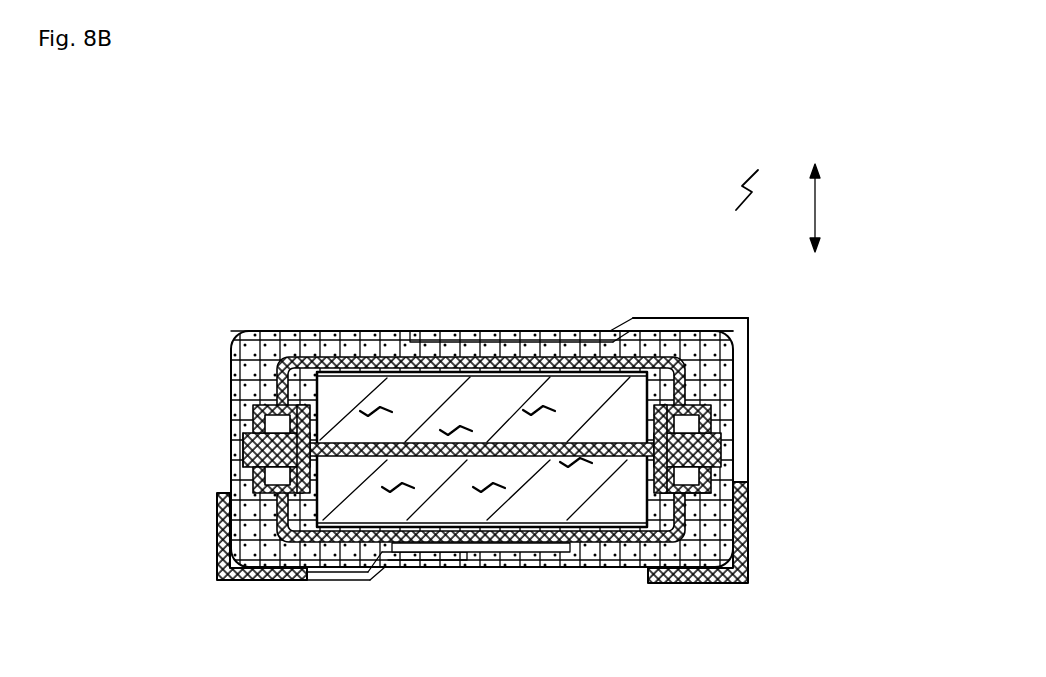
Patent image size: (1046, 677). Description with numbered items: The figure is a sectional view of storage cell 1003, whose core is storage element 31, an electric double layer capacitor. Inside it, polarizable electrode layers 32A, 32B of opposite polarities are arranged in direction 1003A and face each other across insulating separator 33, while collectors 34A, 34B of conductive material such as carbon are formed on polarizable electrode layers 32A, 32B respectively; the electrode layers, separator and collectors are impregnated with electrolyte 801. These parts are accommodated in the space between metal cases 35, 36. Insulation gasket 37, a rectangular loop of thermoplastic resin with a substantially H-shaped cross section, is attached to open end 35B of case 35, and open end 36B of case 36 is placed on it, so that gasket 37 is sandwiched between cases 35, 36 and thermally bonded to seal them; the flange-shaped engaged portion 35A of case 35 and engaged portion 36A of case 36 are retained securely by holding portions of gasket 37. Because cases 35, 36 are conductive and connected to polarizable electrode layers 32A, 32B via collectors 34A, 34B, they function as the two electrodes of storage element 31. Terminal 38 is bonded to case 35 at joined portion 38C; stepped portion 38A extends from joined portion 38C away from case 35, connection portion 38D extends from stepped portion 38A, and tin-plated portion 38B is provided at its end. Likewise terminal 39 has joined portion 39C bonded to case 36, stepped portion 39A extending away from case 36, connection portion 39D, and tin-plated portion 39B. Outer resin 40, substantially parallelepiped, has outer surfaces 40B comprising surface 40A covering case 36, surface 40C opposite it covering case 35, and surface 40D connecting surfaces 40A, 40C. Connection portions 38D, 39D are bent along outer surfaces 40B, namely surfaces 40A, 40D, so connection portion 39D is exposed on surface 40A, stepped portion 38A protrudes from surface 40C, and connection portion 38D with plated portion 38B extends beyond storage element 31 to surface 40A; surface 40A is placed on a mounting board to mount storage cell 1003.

The storage cell 1003 is at (758, 174).
The direction 1003A is at (854, 208).
The storage element 31 is at (308, 376).
The polarizable electrode layer 32A is at (482, 392).
The polarizable electrode layer 32B is at (522, 515).
The separator 33 is at (403, 443).
The collector 34A is at (584, 376).
The collector 34B is at (650, 541).
The case 35 is at (338, 360).
The engaged portion 35A is at (706, 425).
The open end 35B is at (666, 406).
The case 36 is at (618, 547).
The engaged portion 36A is at (707, 478).
The open end 36B is at (690, 503).
The insulation gasket 37 is at (712, 445).
The terminal 38 is at (672, 318).
The stepped portion 38A is at (618, 340).
The plated portion 38B is at (750, 515).
The joined portion 38C is at (538, 342).
The connection portion 38D is at (748, 360).
The terminal 39 is at (350, 572).
The stepped portion 39A is at (373, 570).
The plated portion 39B is at (217, 538).
The joined portion 39C is at (470, 558).
The connection portion 39D is at (318, 571).
The outer resin 40 is at (240, 363).
The surface 40A is at (557, 566).
The outer surfaces 40B is at (700, 321).
The surface 40C is at (437, 333).
The surface 40D is at (243, 447).
The electrolyte 801 is at (382, 492).